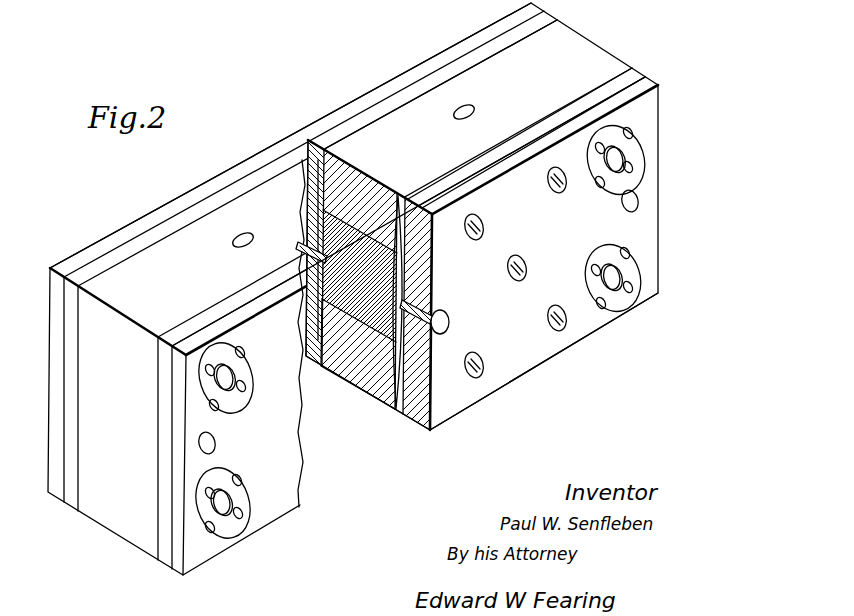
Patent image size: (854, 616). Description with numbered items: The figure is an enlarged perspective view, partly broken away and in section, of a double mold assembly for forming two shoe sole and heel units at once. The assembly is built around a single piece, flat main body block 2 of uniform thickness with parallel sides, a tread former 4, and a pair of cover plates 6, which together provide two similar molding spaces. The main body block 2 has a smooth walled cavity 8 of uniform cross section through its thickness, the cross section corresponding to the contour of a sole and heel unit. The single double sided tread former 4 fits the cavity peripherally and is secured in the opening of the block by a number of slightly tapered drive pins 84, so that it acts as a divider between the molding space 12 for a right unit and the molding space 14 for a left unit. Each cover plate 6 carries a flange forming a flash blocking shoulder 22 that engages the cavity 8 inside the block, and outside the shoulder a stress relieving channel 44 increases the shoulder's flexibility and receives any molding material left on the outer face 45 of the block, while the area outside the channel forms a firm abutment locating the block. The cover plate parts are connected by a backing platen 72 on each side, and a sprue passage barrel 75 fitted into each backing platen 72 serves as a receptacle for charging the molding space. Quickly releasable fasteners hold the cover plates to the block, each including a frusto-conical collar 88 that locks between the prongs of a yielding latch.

The main body block 2 is at (600, 58).
The tread former 4 is at (425, 370).
The cover plate 6 is at (548, 120).
The cavity 8 is at (372, 285).
The molding space 12 is at (322, 225).
The molding space 14 is at (396, 287).
The flash blocking shoulder 22 is at (329, 362).
The stress relieving channel 44 is at (318, 197).
The outer face 45 is at (330, 146).
The backing platen 72 is at (456, 46).
The sprue passage barrel 75 is at (299, 252).
The drive pin 84 is at (468, 110).
The frusto-conical collar 88 is at (612, 276).